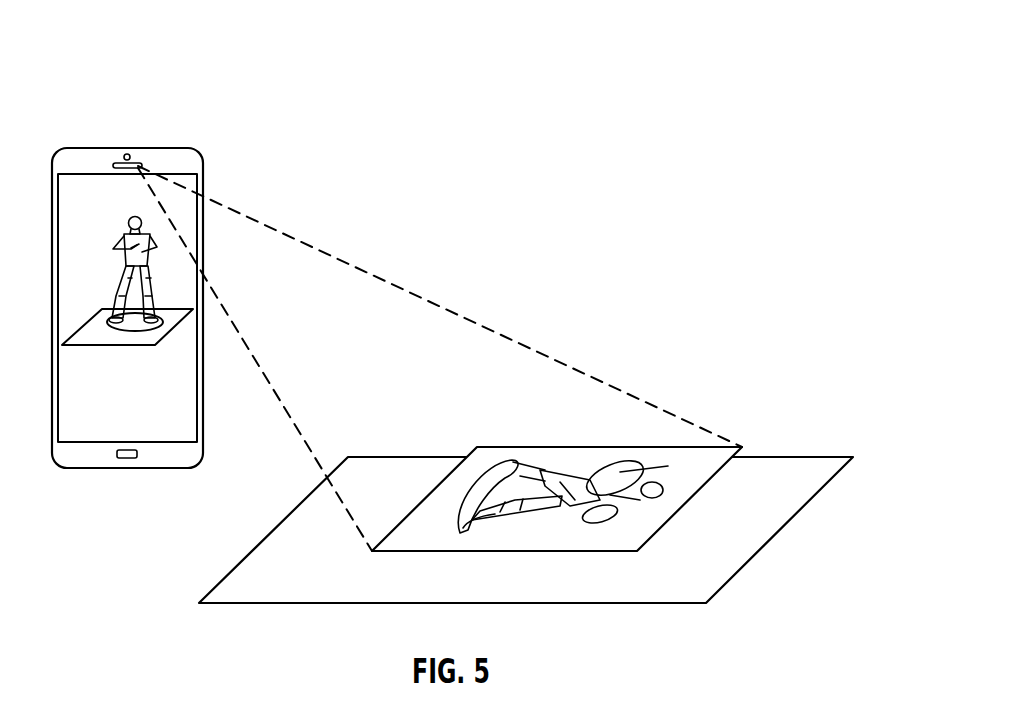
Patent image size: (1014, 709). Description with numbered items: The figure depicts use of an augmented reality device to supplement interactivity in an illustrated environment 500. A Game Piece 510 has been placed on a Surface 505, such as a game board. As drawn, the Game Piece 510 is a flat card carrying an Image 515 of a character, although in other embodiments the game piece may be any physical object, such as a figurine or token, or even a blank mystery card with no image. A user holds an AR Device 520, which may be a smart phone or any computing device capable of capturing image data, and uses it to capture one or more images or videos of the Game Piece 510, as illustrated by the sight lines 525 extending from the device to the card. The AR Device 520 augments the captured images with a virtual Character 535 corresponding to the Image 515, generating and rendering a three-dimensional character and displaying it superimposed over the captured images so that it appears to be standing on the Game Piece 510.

The environment 500 is at (112, 58).
The surface 505 is at (810, 485).
The game piece 510 is at (125, 348).
The image 515 is at (540, 468).
The AR device 520 is at (178, 148).
The sight lines 525 is at (445, 305).
The virtual character 535 is at (119, 223).